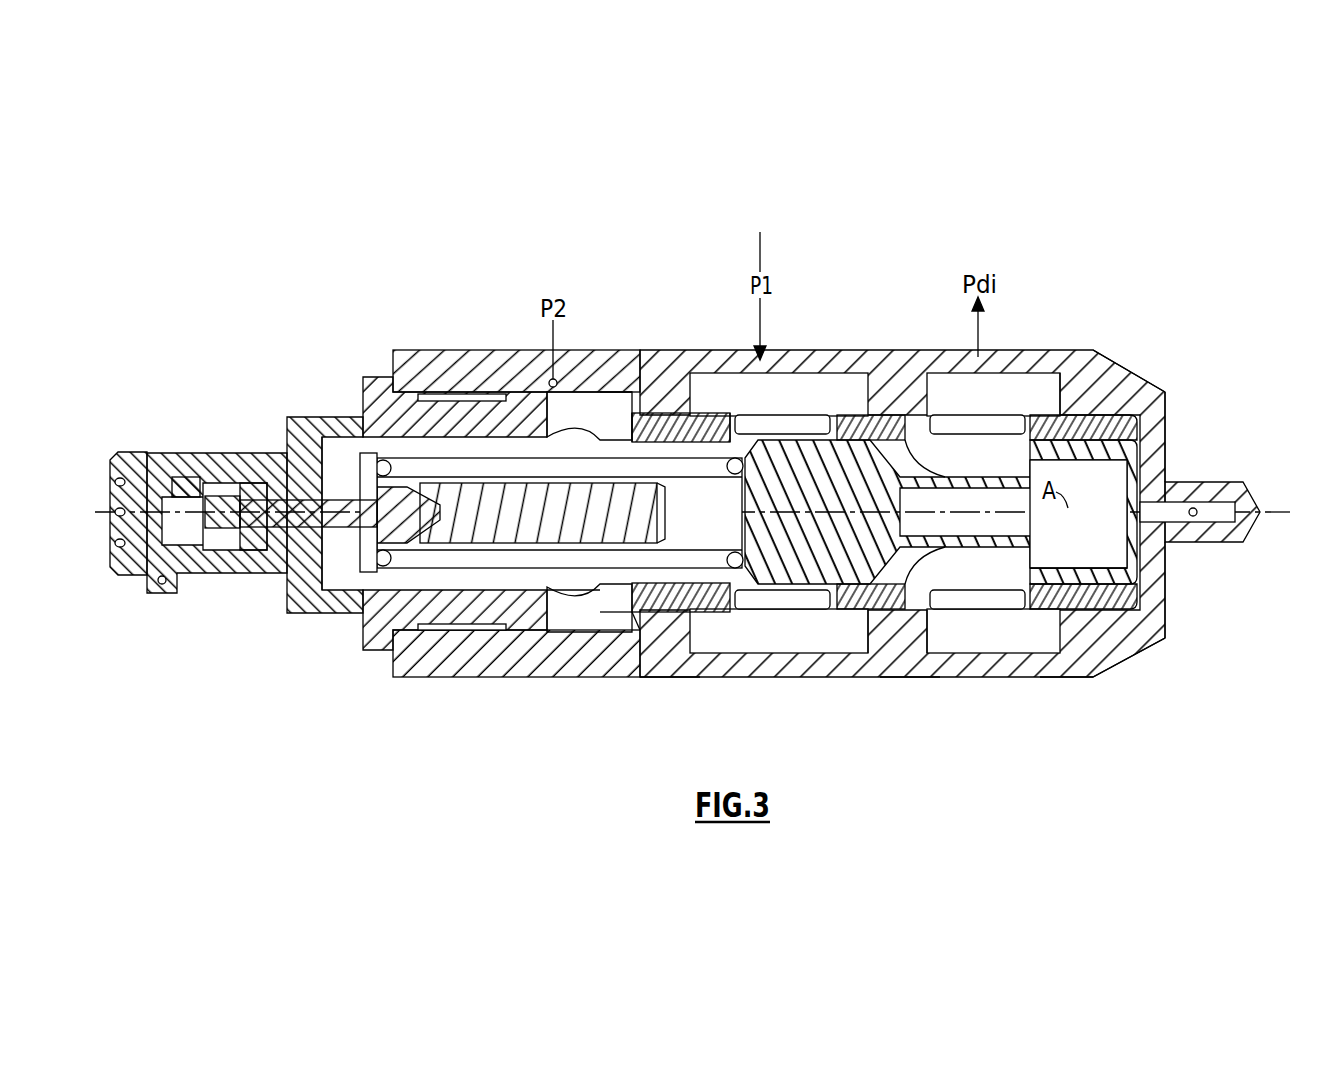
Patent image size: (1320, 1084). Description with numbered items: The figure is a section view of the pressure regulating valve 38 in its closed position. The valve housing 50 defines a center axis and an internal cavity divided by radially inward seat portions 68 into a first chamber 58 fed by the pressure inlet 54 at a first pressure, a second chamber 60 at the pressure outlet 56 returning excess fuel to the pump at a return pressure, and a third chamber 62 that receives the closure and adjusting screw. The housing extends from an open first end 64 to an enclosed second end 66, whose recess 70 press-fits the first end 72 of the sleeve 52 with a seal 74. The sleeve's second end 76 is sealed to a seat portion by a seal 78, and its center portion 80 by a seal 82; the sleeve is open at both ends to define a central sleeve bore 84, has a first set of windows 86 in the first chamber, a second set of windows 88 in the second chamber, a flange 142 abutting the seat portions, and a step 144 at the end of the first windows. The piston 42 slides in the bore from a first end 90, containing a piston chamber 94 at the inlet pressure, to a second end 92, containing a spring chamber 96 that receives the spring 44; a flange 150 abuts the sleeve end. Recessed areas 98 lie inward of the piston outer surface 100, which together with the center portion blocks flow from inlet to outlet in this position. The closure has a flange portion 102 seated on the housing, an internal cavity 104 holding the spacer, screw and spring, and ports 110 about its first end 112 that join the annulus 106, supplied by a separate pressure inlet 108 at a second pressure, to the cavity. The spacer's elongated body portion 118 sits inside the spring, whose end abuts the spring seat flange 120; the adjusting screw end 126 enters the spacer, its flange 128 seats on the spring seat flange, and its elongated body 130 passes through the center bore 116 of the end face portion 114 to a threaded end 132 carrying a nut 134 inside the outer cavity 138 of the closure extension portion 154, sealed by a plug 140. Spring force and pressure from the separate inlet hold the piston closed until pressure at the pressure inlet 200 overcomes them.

The pressure regulating valve 38 is at (1020, 207).
The piston 42 is at (1050, 612).
The spring 44 is at (497, 600).
The valve housing 50 is at (1093, 348).
The sleeve 52 is at (1108, 386).
The pressure inlet 54 is at (767, 345).
The pressure outlet 56 is at (985, 330).
The first chamber 58 is at (835, 380).
The second chamber 60 is at (1020, 385).
The third chamber 62 is at (612, 396).
The open first end 64 is at (395, 352).
The enclosed second end 66 is at (1160, 392).
The seat portions 68 is at (680, 640).
The recess 70 is at (1166, 420).
The first end of the sleeve 72 is at (1130, 640).
The seal 74 is at (1098, 665).
The second end of the sleeve 76 is at (662, 428).
The seal 78 is at (668, 580).
The center portion of the sleeve 80 is at (872, 620).
The seal 82 is at (893, 615).
The central sleeve bore 84 is at (1150, 605).
The first set of windows 86 is at (740, 414).
The second set of windows 88 is at (946, 414).
The first end of the piston 90 is at (1122, 455).
The second end of the piston 92 is at (628, 418).
The piston chamber 94 is at (1108, 552).
The spring chamber 96 is at (698, 438).
The recessed areas 98 is at (932, 465).
The piston outer surface 100 is at (865, 565).
The flange portion 102 is at (362, 390).
The internal cavity 104 is at (345, 572).
The annulus 106 is at (580, 400).
The separate pressure inlet 108 is at (548, 380).
The ports 110 is at (500, 396).
The first end of the closure 112 is at (625, 610).
The end face portion 114 is at (305, 600).
The center bore 116 is at (302, 485).
The elongated body portion 118 is at (556, 526).
The spring seat flange 120 is at (385, 575).
The end of the adjusting screw 126 is at (425, 512).
The flange of the adjusting screw 128 is at (362, 460).
The elongated body of the adjusting screw 130 is at (300, 530).
The threaded end 132 is at (218, 495).
The nut 134 is at (252, 484).
The outer cavity 138 is at (186, 478).
The plug 140 is at (132, 453).
The flange of the sleeve 142 is at (645, 605).
The step 144 is at (845, 612).
The flange of the piston 150 is at (600, 612).
The closure extension portion 154 is at (212, 575).
The pressure inlet 200 is at (1197, 516).